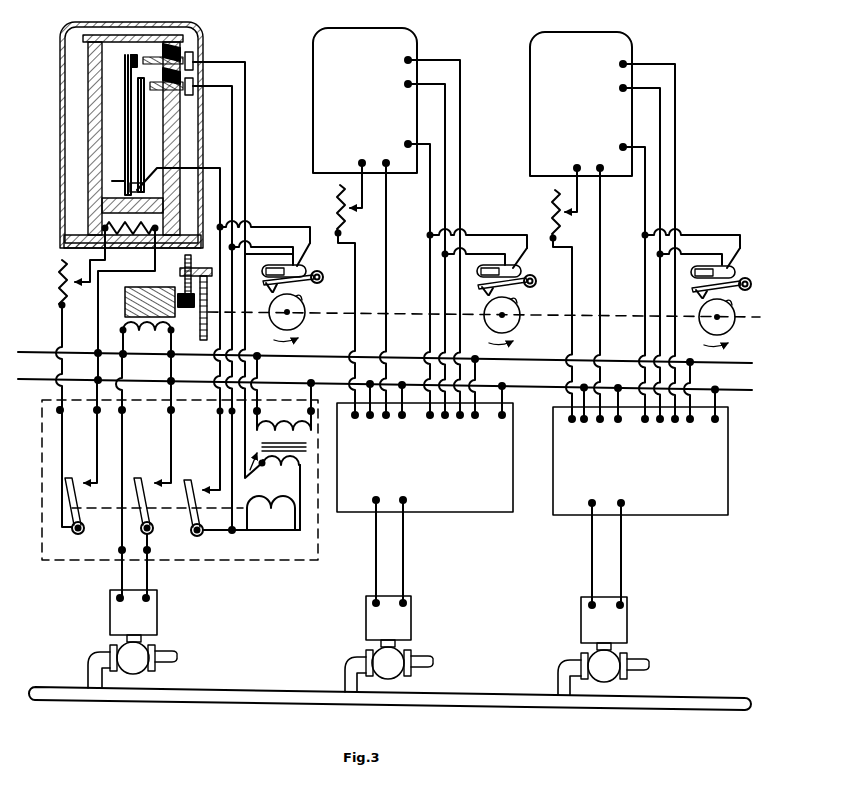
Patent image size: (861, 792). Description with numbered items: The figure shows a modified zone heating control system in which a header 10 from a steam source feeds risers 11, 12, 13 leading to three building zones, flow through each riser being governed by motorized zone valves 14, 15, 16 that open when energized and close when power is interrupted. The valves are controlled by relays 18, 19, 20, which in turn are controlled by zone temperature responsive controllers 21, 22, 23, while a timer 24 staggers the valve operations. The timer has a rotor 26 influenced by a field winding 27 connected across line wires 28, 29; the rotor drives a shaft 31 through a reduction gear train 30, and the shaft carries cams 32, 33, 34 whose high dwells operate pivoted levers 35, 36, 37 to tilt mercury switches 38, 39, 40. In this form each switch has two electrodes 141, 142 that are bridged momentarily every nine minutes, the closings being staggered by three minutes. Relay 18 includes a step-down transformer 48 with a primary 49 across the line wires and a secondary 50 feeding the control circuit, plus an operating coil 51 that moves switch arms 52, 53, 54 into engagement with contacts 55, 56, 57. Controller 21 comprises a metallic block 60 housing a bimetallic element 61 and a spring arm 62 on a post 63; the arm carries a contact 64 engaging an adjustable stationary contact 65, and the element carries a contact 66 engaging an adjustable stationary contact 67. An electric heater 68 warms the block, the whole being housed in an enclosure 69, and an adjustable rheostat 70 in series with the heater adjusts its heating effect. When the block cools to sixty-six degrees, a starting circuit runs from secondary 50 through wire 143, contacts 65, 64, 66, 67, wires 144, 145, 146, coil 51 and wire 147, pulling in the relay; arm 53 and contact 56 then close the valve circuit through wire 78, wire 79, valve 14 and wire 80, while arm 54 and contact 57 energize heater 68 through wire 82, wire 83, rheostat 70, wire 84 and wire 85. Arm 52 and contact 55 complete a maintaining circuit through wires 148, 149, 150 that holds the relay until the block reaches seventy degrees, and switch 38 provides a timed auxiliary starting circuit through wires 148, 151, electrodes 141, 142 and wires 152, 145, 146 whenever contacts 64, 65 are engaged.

The header 10 is at (159, 700).
The riser 11 is at (88, 660).
The riser 12 is at (344, 666).
The riser 13 is at (564, 671).
The motorized zone valve 14 is at (157, 629).
The motorized zone valve 15 is at (411, 631).
The motorized zone valve 16 is at (627, 633).
The relay 18 is at (232, 563).
The relay 19 is at (468, 503).
The relay 20 is at (688, 506).
The zone temperature responsive controller 21 is at (109, 139).
The zone temperature responsive controller 22 is at (296, 33).
The zone temperature responsive controller 23 is at (518, 40).
The timer 24 is at (742, 318).
The rotor 26 is at (126, 292).
The field winding 27 is at (138, 335).
The line wire 28 is at (28, 367).
The line wire 29 is at (28, 338).
The reduction gear train 30 is at (184, 272).
The shaft 31 is at (210, 312).
The cam 32 is at (281, 325).
The cam 33 is at (494, 327).
The cam 34 is at (705, 331).
The pivoted lever 35 is at (271, 288).
The pivoted lever 36 is at (481, 292).
The pivoted lever 37 is at (695, 297).
The mercury switch 38 is at (312, 280).
The mercury switch 39 is at (526, 281).
The mercury switch 40 is at (741, 284).
The step-down transformer 48 is at (250, 465).
The primary 49 is at (267, 424).
The secondary 50 is at (277, 470).
The operating coil 51 is at (262, 520).
The switch arm 52 is at (203, 526).
The switch arm 53 is at (153, 525).
The switch arm 54 is at (85, 525).
The contact 55 is at (202, 477).
The contact 56 is at (151, 477).
The contact 57 is at (80, 477).
The metallic block 60 is at (88, 115).
The bimetallic element 61 is at (144, 182).
The spring arm 62 is at (126, 84).
The post 63 is at (112, 180).
The contact 64 is at (133, 55).
The adjustable stationary contact 65 is at (160, 57).
The contact 66 is at (149, 135).
The adjustable stationary contact 67 is at (156, 96).
The electric heater 68 is at (116, 240).
The enclosure 69 is at (64, 173).
The adjustable rheostat 70 is at (62, 279).
The wire 78 is at (171, 389).
The wire 79 is at (148, 577).
The wire 80 is at (121, 364).
The wire 82 is at (97, 389).
The wire 83 is at (60, 389).
The wire 84 is at (98, 282).
The wire 85 is at (97, 324).
The electrode 141 is at (304, 250).
The electrode 142 is at (288, 255).
The wire 143 is at (252, 80).
The wire 144 is at (209, 90).
The wire 145 is at (231, 500).
The wire 146 is at (239, 533).
The wire 147 is at (300, 494).
The wire 148 is at (209, 168).
The wire 149 is at (218, 425).
The wire 150 is at (210, 534).
The wire 151 is at (267, 227).
The wire 152 is at (250, 249).